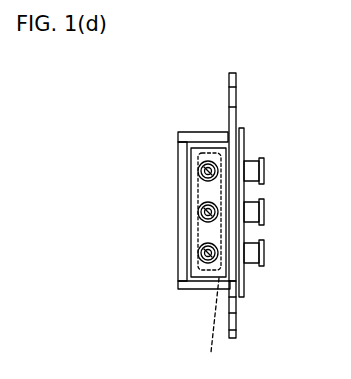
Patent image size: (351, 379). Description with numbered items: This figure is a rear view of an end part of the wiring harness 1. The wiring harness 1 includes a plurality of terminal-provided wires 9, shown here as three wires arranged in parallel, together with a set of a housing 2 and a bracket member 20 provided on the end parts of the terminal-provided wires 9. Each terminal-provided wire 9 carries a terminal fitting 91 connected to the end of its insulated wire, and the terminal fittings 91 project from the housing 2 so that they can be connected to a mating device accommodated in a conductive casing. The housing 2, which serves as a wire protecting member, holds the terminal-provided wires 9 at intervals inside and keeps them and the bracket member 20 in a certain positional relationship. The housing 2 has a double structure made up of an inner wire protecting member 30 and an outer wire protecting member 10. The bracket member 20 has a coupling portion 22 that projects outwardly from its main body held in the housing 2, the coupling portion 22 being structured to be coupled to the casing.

The wiring harness 1 is at (268, 33).
The housing 2 is at (200, 126).
The terminal-provided wire 9 is at (196, 207).
The outer wire protecting member 10 is at (207, 132).
The bracket member 20 is at (238, 306).
The coupling portion 22 is at (236, 88).
The inner wire protecting member 30 is at (216, 327).
The terminal fitting 91 is at (265, 214).